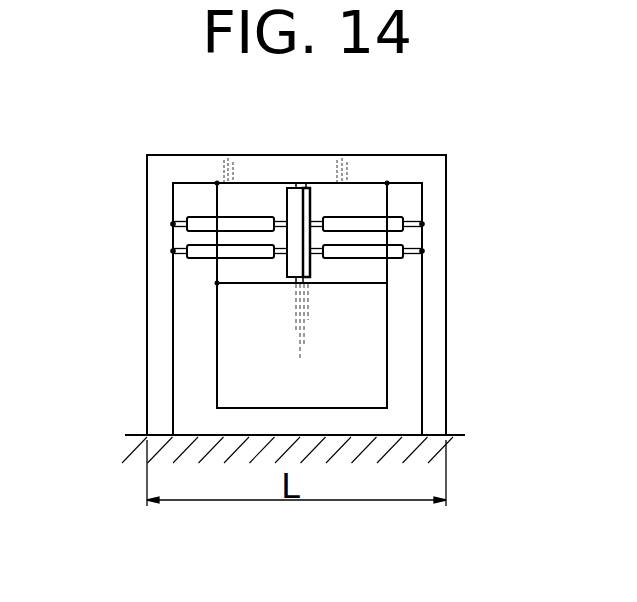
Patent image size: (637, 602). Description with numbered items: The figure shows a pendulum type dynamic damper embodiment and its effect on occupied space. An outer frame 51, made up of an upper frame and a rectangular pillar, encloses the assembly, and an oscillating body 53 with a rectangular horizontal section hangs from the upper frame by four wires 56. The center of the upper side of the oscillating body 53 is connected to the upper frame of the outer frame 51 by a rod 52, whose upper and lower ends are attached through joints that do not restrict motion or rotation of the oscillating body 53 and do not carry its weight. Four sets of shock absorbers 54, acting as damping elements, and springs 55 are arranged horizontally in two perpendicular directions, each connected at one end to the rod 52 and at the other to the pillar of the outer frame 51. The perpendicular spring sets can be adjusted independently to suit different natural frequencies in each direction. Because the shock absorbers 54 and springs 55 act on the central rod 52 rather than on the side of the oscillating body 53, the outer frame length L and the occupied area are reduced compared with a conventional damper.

The outer frame 51 is at (433, 191).
The rod 52 is at (312, 186).
The oscillating body 53 is at (367, 375).
The shock absorber 54 is at (252, 226).
The spring 55 is at (200, 259).
The wire 56 is at (212, 208).